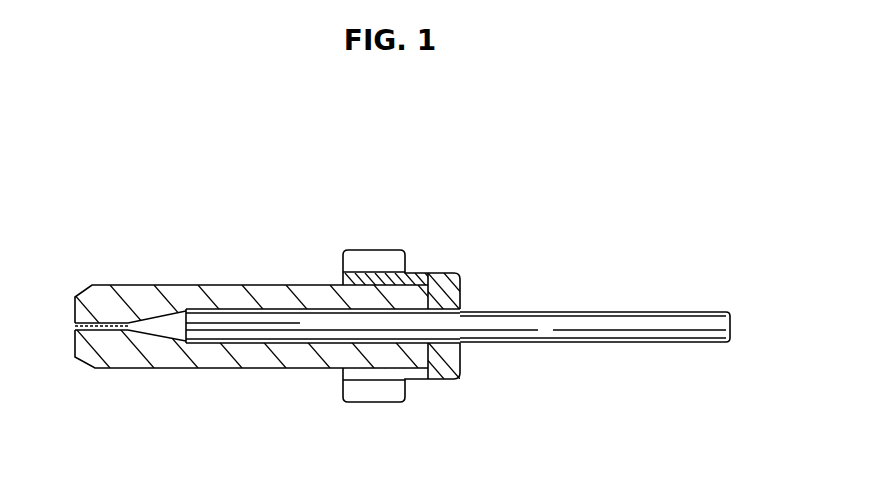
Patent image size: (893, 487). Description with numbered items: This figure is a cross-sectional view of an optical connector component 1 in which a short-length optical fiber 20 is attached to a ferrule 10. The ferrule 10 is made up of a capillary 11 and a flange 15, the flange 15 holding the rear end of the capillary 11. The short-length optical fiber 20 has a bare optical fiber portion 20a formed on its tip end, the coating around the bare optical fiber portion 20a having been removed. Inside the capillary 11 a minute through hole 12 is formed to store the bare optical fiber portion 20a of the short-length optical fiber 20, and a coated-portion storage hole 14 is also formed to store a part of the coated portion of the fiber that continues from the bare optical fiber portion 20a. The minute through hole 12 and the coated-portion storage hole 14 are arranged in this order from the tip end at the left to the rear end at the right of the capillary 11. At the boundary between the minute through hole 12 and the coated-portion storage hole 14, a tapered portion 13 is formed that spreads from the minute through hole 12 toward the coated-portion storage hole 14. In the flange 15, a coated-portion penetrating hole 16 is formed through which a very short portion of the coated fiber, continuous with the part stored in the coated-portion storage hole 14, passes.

The optical connector component 1 is at (468, 148).
The ferrule 10 is at (237, 172).
The capillary 11 is at (255, 282).
The minute through hole 12 is at (118, 336).
The tapered portion 13 is at (168, 336).
The coated-portion storage hole 14 is at (270, 340).
The flange 15 is at (372, 248).
The coated-portion penetrating hole 16 is at (434, 343).
The short-length optical fiber 20 is at (588, 311).
The bare optical fiber portion 20a is at (107, 322).